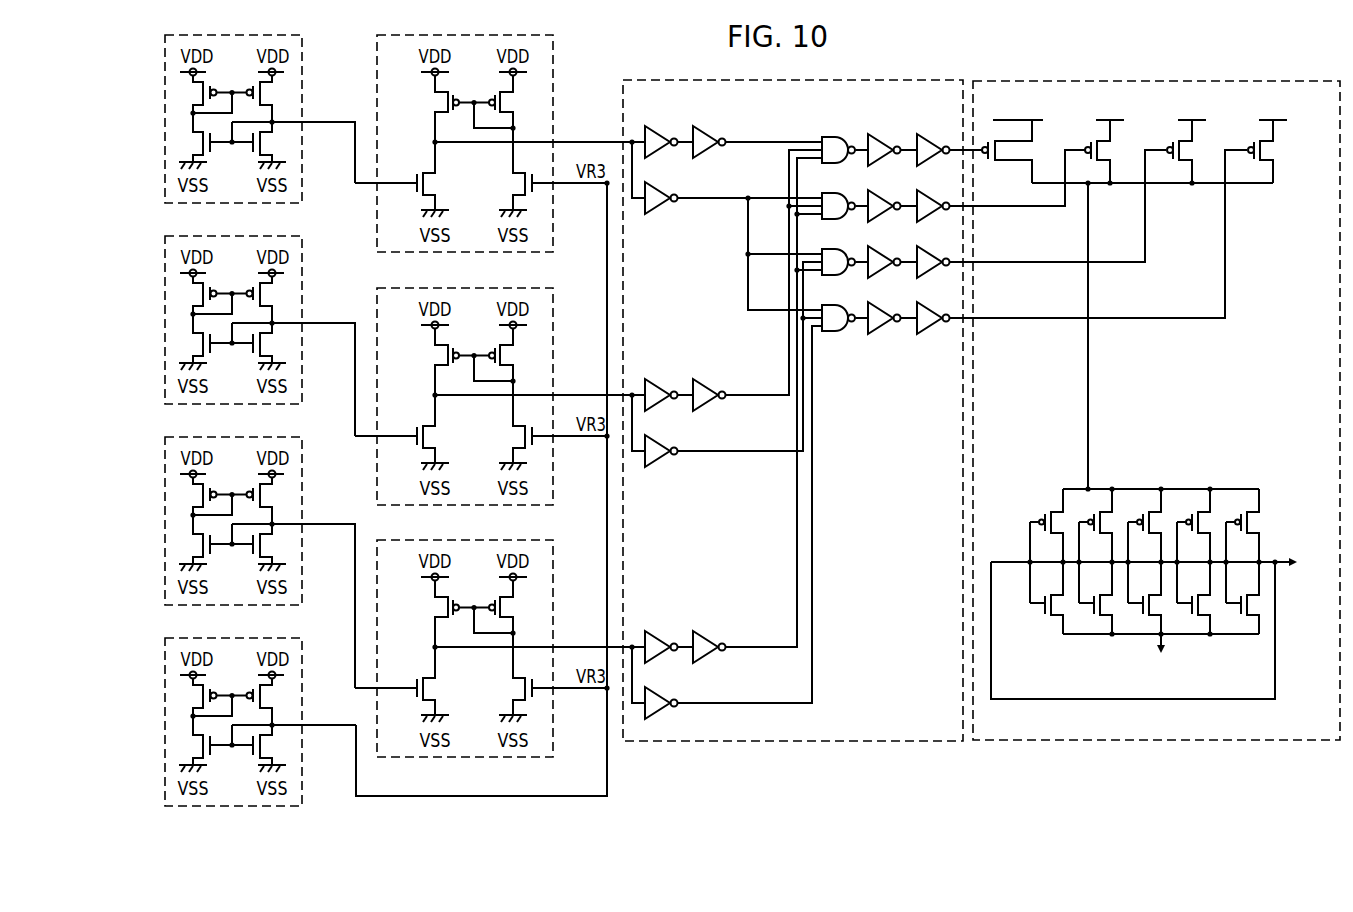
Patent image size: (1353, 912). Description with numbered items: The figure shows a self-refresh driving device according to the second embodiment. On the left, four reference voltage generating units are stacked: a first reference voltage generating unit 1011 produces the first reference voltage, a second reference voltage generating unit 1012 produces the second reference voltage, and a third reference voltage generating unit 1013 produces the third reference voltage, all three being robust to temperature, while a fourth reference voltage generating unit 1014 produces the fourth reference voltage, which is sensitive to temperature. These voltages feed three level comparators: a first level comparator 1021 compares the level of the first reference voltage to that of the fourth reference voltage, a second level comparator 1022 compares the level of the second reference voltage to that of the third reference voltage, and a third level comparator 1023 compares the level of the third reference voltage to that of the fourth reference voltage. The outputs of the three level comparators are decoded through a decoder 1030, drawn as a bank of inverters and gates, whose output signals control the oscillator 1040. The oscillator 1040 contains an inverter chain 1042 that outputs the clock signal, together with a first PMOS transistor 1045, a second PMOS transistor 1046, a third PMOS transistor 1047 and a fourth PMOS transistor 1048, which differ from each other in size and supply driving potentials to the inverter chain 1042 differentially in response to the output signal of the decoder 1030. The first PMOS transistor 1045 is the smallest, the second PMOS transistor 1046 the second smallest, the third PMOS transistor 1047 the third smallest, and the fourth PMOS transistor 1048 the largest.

The first reference voltage generator 1011 is at (250, 36).
The second reference voltage generating unit 1012 is at (260, 322).
The third reference voltage generating unit 1013 is at (260, 549).
The fourth reference voltage generating unit 1014 is at (260, 708).
The first level comparator 1021 is at (503, 36).
The second level comparator 1022 is at (500, 384).
The third level comparator 1023 is at (500, 636).
The decoder 1030 is at (905, 80).
The oscillator 1040 is at (1285, 82).
The inverter chain 1042 is at (1057, 629).
The first PMOS transistor 1045 is at (1033, 148).
The second PMOS transistor 1046 is at (1113, 148).
The third PMOS transistor 1047 is at (1195, 148).
The fourth PMOS transistor 1048 is at (1274, 148).